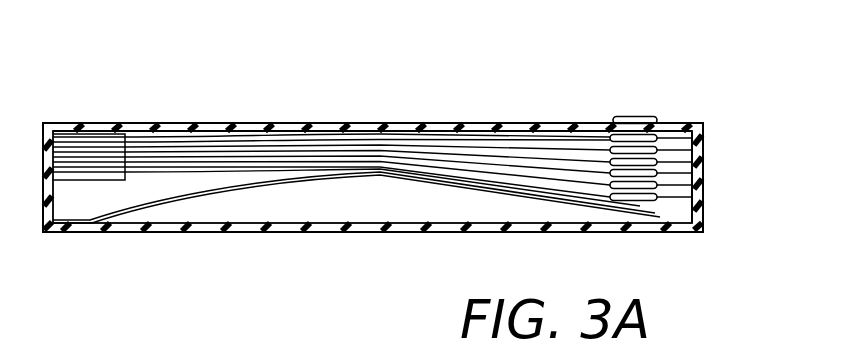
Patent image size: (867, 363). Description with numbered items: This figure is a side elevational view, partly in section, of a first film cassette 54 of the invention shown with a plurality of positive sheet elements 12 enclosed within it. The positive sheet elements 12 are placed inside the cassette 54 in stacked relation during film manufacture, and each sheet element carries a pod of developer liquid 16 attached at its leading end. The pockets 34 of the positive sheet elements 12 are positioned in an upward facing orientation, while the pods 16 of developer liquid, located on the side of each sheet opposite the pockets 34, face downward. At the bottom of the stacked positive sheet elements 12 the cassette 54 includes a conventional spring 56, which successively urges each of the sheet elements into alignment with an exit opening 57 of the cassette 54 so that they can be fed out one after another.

The positive sheet element 12 is at (121, 153).
The pod of developer liquid 16 is at (706, 190).
The pocket 34 is at (602, 168).
The cassette 54 is at (265, 122).
The spring 56 is at (410, 176).
The exit opening 57 is at (711, 97).